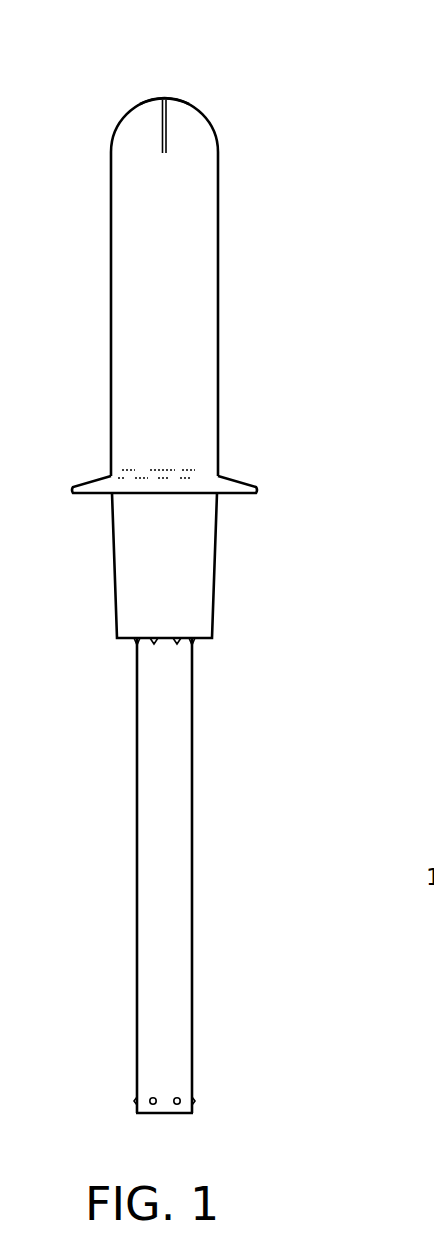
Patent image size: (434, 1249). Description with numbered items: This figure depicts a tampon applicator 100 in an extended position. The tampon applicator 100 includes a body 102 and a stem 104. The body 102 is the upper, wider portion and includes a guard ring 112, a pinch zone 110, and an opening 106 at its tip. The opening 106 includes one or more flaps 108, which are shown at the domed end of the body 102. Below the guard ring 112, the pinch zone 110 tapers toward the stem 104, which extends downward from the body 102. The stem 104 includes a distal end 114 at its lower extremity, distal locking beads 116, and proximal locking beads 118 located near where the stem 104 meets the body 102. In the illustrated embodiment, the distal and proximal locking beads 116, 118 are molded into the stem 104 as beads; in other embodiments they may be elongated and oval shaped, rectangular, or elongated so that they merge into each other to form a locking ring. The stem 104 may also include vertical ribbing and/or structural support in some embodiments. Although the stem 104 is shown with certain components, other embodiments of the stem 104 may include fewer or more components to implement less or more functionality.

The tampon applicator 100 is at (295, 186).
The body 102 is at (218, 320).
The stem 104 is at (193, 747).
The opening 106 is at (170, 84).
The flap 108 is at (190, 125).
The pinch zone 110 is at (215, 555).
The guard ring 112 is at (250, 483).
The distal end 114 is at (133, 1112).
The distal locking beads 116 is at (136, 1100).
The proximal locking beads 118 is at (137, 642).